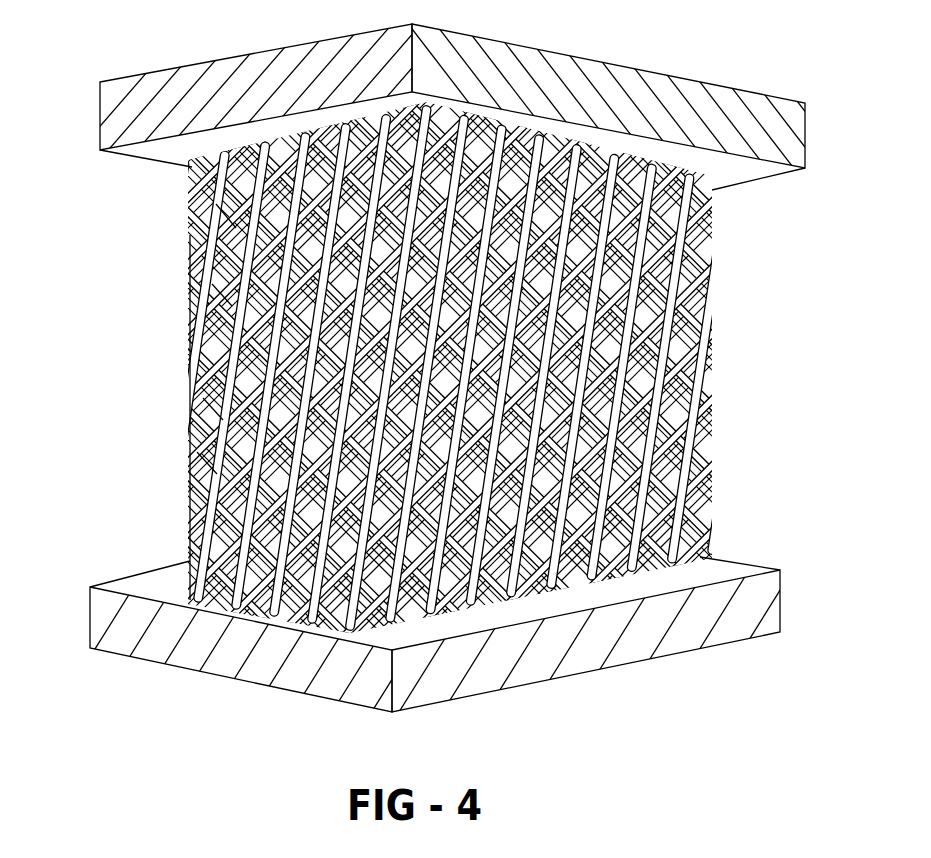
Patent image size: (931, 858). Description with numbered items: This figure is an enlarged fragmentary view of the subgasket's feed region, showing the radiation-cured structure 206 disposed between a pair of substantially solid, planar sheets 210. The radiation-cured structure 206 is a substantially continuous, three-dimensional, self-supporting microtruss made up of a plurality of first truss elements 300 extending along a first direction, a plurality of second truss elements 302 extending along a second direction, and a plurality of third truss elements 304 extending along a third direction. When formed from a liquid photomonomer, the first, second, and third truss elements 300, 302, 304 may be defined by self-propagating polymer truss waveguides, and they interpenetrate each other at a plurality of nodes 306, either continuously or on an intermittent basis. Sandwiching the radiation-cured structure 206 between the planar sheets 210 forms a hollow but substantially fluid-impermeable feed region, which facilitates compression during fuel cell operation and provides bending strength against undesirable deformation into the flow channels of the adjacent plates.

The substantially solid, planar sheet 210 is at (642, 108).
The radiation-cured structure 206 is at (320, 552).
The first truss elements 300 is at (213, 287).
The second truss elements 302 is at (203, 400).
The third truss elements 304 is at (197, 453).
The nodes 306 is at (218, 207).